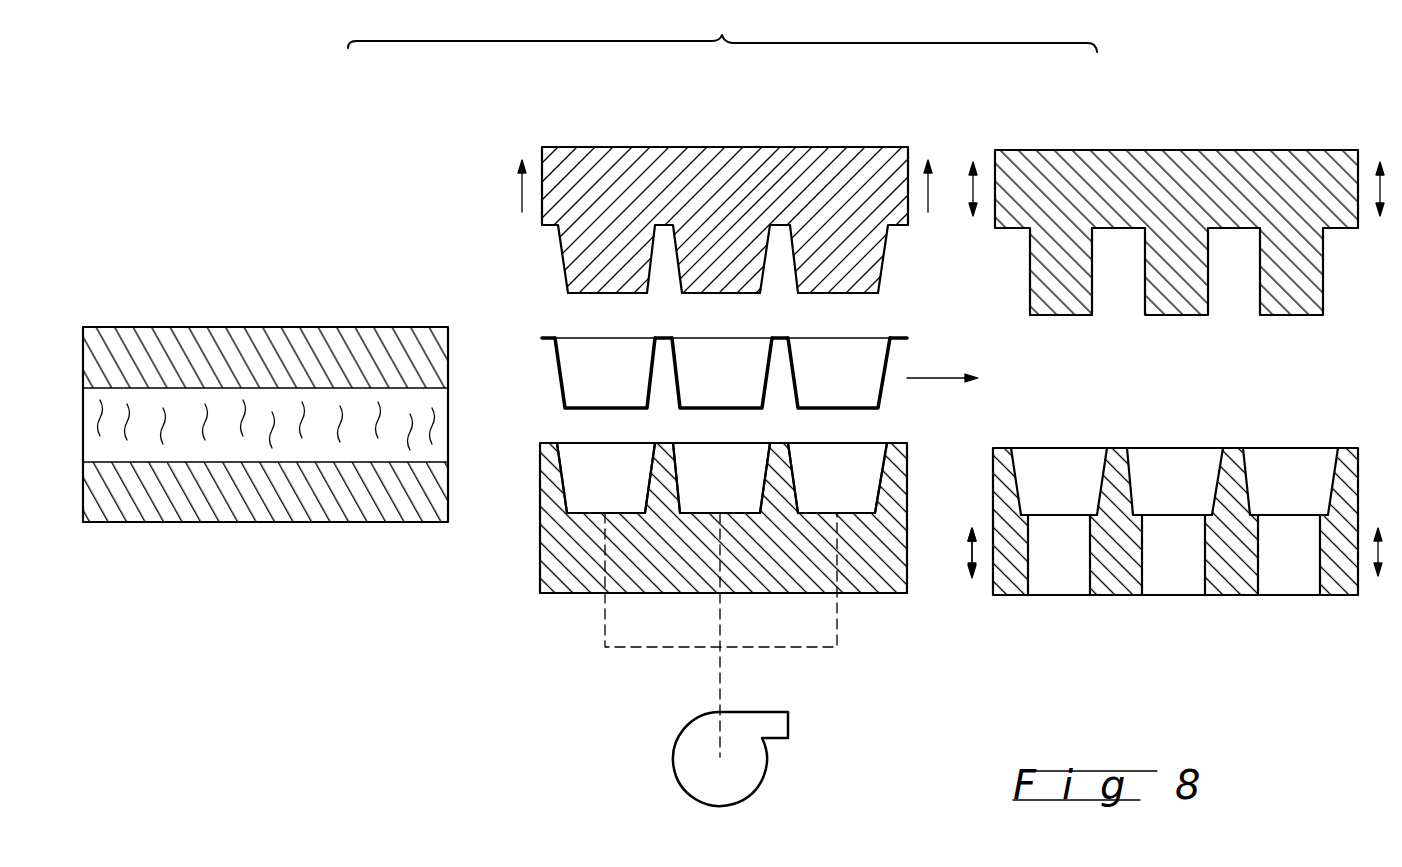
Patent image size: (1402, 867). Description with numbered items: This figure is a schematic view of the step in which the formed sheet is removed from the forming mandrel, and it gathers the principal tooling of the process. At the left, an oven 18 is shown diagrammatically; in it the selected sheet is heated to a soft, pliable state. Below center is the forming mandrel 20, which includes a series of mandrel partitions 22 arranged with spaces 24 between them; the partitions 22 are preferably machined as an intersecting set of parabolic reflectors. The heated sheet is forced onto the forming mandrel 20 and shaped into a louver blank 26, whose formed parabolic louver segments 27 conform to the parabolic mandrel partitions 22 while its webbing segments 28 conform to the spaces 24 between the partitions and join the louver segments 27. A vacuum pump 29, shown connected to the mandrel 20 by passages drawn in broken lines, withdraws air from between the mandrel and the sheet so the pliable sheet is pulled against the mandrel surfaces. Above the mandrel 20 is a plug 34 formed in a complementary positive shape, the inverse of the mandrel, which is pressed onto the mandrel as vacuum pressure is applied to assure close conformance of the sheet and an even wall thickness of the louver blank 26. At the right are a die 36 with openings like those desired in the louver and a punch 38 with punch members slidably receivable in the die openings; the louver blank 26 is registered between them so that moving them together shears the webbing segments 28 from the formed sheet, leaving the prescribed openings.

The oven 18 is at (255, 327).
The forming mandrel 20 is at (731, 528).
The mandrel partitions 22 is at (780, 462).
The spaces 24 is at (740, 497).
The louver blank 26 is at (766, 353).
The louver segments 27 is at (770, 365).
The webbing segments 28 is at (835, 407).
The vacuum pump 29 is at (673, 776).
The plug 34 is at (637, 147).
The die 36 is at (1123, 595).
The punch 38 is at (1113, 150).